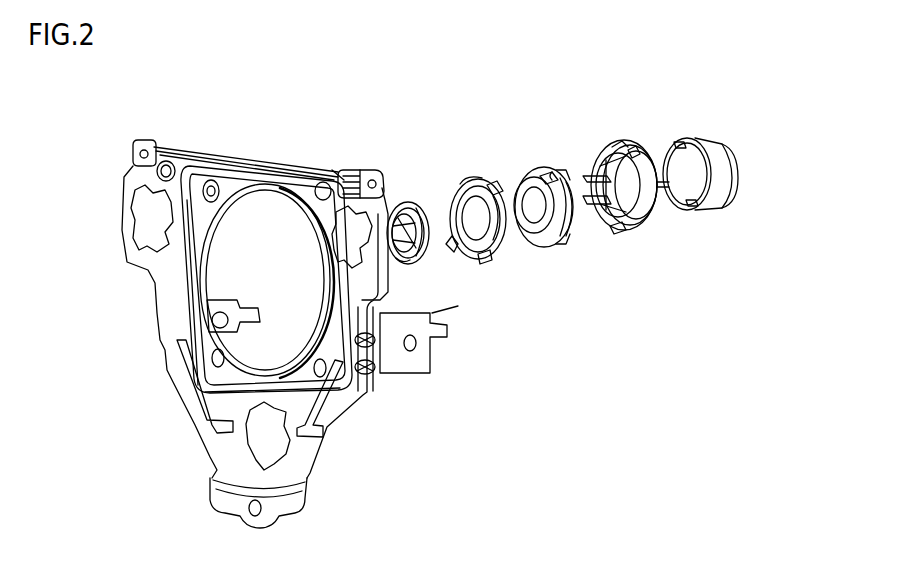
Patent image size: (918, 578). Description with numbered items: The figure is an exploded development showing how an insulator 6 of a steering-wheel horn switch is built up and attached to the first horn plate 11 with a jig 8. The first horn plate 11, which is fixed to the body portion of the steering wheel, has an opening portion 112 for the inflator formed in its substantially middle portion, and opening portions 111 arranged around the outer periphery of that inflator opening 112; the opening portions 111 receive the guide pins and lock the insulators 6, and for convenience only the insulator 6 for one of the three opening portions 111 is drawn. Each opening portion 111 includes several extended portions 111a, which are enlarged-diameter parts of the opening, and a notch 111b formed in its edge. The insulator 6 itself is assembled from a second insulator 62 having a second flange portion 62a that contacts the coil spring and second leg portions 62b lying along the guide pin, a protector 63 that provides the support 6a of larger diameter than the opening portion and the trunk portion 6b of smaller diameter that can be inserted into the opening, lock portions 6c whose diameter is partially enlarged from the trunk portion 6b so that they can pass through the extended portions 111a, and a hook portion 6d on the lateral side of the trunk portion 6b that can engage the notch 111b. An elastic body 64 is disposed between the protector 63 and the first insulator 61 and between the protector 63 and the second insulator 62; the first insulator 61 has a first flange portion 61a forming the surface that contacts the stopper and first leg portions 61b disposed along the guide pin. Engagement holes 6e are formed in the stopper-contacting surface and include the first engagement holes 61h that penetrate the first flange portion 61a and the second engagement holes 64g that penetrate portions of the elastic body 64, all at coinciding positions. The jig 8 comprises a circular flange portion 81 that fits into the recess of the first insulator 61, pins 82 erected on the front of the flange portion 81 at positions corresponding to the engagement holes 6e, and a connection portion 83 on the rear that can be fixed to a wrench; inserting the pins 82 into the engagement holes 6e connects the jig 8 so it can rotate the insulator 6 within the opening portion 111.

The first horn plate 11 is at (260, 155).
The opening portions 111 is at (152, 230).
The extended portions 111a is at (342, 169).
The notch 111b is at (360, 170).
The opening portion for the inflator 112 is at (253, 190).
The insulator 6 is at (662, 260).
The second insulator 62 is at (402, 194).
The second flange portion 62a is at (402, 273).
The second leg portions 62b is at (432, 209).
The support 6a is at (464, 186).
The trunk portion 6b is at (458, 252).
The lock portions 6c is at (476, 268).
The hook portion 6d is at (491, 190).
The engagement holes 6e is at (550, 170).
The protector 63 is at (504, 176).
The elastic body 64 is at (568, 166).
The second engagement holes 64g is at (544, 149).
The first insulator 61 is at (640, 135).
The first flange portion 61a is at (614, 235).
The first leg portions 61b is at (590, 215).
The first engagement holes 61h is at (618, 129).
The jig 8 is at (710, 126).
The flange portion 81 is at (675, 210).
The pins 82 is at (677, 140).
The connection portion 83 is at (740, 172).